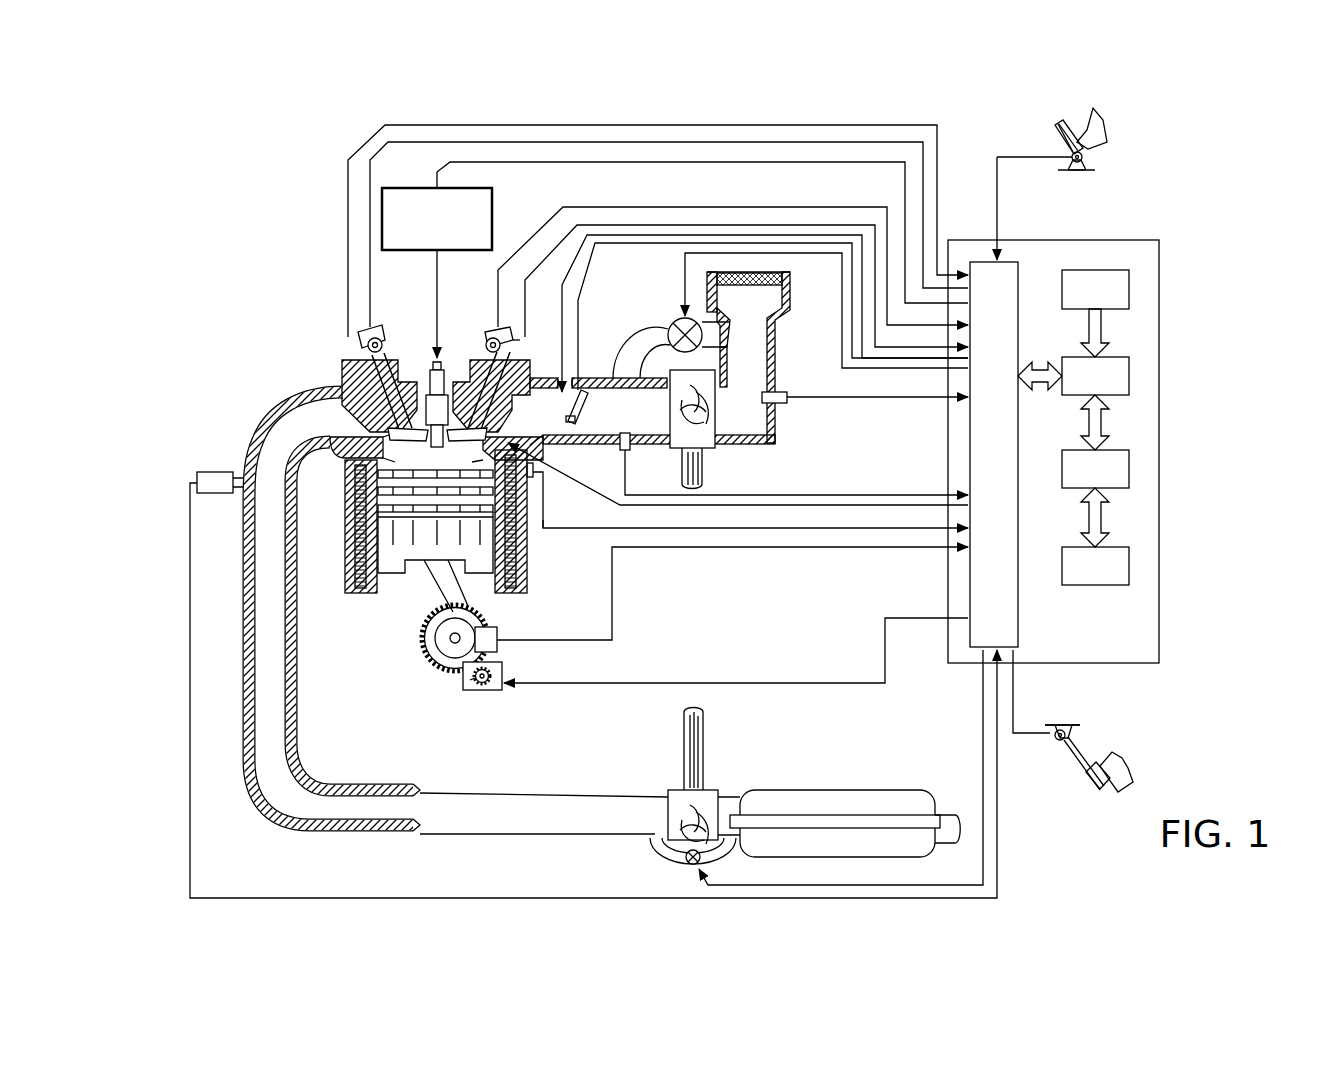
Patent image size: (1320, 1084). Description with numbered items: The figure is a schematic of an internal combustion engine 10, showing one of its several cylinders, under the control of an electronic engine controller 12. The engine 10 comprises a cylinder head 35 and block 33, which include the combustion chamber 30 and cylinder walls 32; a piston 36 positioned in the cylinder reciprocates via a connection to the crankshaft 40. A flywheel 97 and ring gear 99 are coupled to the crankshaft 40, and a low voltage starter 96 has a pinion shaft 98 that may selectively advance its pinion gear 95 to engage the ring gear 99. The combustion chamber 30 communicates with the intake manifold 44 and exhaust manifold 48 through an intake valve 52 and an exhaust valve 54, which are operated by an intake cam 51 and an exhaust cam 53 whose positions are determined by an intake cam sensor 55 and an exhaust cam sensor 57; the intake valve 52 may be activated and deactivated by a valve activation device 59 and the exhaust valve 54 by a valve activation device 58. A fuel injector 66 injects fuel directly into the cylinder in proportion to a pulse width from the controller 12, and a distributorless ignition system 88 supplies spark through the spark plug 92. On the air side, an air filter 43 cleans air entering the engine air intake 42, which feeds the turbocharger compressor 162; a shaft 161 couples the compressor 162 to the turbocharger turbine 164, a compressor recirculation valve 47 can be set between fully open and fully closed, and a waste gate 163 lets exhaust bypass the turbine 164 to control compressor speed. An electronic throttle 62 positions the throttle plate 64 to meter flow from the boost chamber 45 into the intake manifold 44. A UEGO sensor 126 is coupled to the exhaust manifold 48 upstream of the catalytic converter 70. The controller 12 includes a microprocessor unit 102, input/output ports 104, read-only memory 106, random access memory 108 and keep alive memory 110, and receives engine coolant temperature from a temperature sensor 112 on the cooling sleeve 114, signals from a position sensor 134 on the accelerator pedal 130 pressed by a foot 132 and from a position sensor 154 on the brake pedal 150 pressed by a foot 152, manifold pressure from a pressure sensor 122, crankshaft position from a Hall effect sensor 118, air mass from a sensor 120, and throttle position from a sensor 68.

The internal combustion engine 10 is at (283, 318).
The electronic engine controller 12 is at (1159, 247).
The combustion chamber 30 is at (433, 450).
The cylinder walls 32 is at (378, 595).
The block 33 is at (342, 494).
The cylinder head 35 is at (340, 358).
The piston 36 is at (425, 575).
The crankshaft 40 is at (433, 668).
The engine air intake 42 is at (640, 305).
The air filter 43 is at (765, 285).
The intake manifold 44 is at (558, 422).
The boost chamber 45 is at (645, 422).
The compressor recirculation valve 47 is at (678, 322).
The exhaust manifold 48 is at (326, 428).
The intake cam 51 is at (490, 328).
The intake valve 52 is at (478, 415).
The exhaust cam 53 is at (377, 330).
The exhaust valve 54 is at (356, 409).
The intake cam sensor 55 is at (513, 338).
The exhaust cam sensor 57 is at (360, 340).
The valve activation device 58 is at (382, 345).
The valve activation device 59 is at (487, 345).
The electronic throttle 62 is at (586, 409).
The throttle plate 64 is at (578, 422).
The fuel injector 66 is at (538, 479).
The throttle position sensor 68 is at (560, 384).
The catalytic converter 70 is at (775, 791).
The distributorless ignition system 88 is at (397, 188).
The spark plug 92 is at (443, 362).
The pinion gear 95 is at (486, 690).
The starter 96 is at (500, 685).
The flywheel 97 is at (425, 642).
The pinion shaft 98 is at (470, 684).
The ring gear 99 is at (448, 676).
The microprocessor unit 102 is at (1129, 376).
The input/output ports 104 is at (1019, 263).
The read-only memory 106 is at (1129, 289).
The random access memory 108 is at (1129, 468).
The keep alive memory 110 is at (1129, 565).
The temperature sensor 112 is at (558, 516).
The cooling sleeve 114 is at (514, 548).
The Hall effect sensor 118 is at (497, 630).
The air mass sensor 120 is at (778, 392).
The pressure sensor 122 is at (620, 449).
The UEGO sensor 126 is at (197, 476).
The accelerator pedal 130 is at (1058, 128).
The foot 132 is at (1108, 126).
The position sensor 134 is at (1087, 160).
The brake pedal 150 is at (1090, 782).
The foot 152 is at (1118, 753).
The position sensor 154 is at (1057, 731).
The shaft 161 is at (681, 466).
The turbocharger compressor 162 is at (705, 446).
The waste gate 163 is at (681, 877).
The turbocharger turbine 164 is at (675, 790).